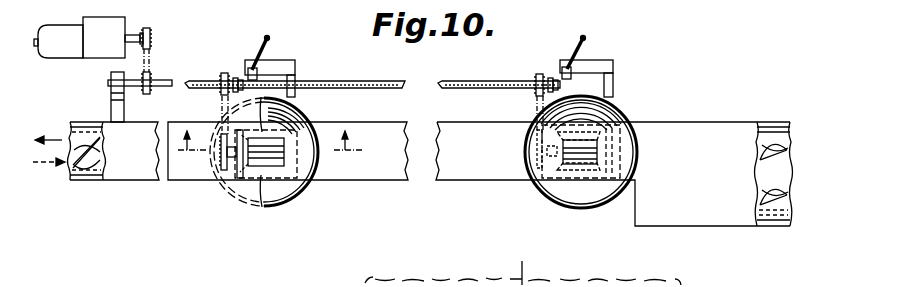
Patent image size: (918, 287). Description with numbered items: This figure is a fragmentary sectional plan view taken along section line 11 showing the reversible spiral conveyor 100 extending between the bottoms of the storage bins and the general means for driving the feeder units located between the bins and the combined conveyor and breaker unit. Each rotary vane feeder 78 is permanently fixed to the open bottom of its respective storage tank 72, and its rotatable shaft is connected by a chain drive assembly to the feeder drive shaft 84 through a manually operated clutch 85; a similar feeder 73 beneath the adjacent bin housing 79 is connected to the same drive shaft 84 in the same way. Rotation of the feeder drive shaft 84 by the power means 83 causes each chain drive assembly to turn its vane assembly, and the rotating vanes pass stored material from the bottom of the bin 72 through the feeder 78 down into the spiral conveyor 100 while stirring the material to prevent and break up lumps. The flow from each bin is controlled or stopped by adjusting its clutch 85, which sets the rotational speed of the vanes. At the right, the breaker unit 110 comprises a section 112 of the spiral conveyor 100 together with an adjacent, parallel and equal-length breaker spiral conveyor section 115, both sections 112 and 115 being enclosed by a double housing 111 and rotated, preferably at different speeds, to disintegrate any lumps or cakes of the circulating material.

The section line 11 is at (270, 151).
The storage tank 72 is at (298, 190).
The hub 73 is at (568, 196).
The rotary vane feeder 78 is at (249, 187).
The housing 79 is at (645, 109).
The power means 83 is at (172, 41).
The feeder drive shaft 84 is at (450, 84).
The manually operated clutch 85 is at (239, 74).
The reversible spiral conveyor 100 is at (90, 188).
The breaker unit 110 is at (775, 236).
The double housing 111 is at (700, 218).
The spiral conveyor section 112 is at (85, 137).
The breaker spiral conveyor section 115 is at (781, 202).